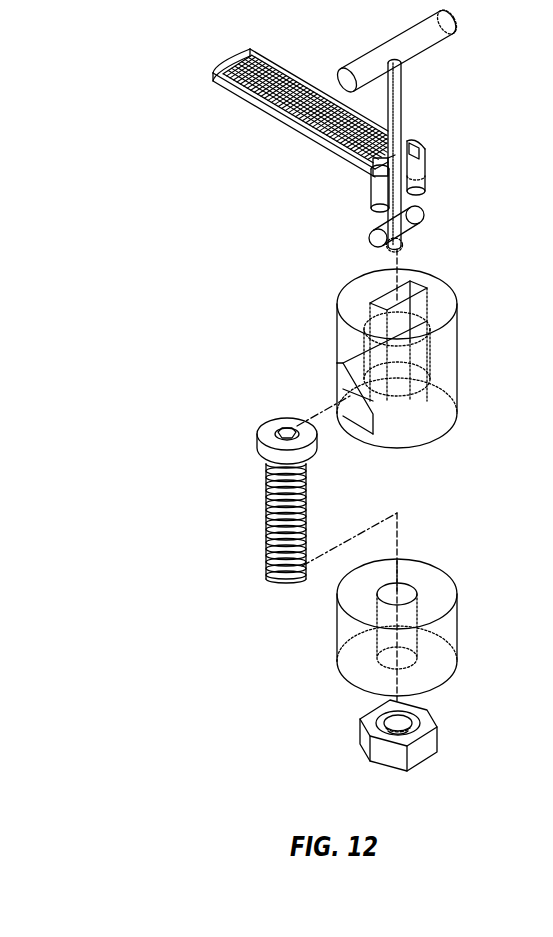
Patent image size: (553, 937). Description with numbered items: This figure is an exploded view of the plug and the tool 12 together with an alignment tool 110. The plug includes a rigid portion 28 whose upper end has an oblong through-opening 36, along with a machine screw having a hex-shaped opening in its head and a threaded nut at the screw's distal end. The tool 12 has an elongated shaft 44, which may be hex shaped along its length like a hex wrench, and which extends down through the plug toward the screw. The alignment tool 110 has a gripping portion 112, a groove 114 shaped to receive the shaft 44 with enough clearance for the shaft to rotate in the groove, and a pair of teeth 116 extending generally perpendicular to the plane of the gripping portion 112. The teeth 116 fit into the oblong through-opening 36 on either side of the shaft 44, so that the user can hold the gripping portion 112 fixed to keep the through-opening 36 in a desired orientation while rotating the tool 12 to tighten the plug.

The tool 12 is at (450, 61).
The rigid portion 28 is at (460, 361).
The oblong through-opening 36 is at (419, 282).
The elongated shaft 44 is at (404, 99).
The alignment tool 110 is at (203, 118).
The gripping portion 112 is at (292, 78).
The groove 114 is at (357, 144).
The teeth 116 is at (425, 170).